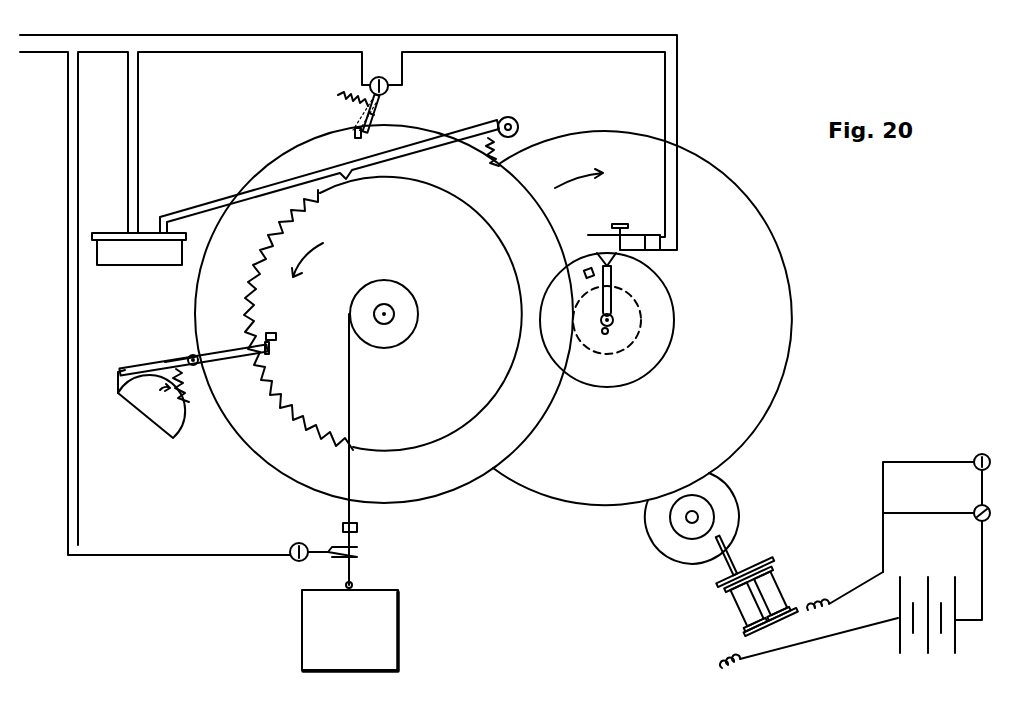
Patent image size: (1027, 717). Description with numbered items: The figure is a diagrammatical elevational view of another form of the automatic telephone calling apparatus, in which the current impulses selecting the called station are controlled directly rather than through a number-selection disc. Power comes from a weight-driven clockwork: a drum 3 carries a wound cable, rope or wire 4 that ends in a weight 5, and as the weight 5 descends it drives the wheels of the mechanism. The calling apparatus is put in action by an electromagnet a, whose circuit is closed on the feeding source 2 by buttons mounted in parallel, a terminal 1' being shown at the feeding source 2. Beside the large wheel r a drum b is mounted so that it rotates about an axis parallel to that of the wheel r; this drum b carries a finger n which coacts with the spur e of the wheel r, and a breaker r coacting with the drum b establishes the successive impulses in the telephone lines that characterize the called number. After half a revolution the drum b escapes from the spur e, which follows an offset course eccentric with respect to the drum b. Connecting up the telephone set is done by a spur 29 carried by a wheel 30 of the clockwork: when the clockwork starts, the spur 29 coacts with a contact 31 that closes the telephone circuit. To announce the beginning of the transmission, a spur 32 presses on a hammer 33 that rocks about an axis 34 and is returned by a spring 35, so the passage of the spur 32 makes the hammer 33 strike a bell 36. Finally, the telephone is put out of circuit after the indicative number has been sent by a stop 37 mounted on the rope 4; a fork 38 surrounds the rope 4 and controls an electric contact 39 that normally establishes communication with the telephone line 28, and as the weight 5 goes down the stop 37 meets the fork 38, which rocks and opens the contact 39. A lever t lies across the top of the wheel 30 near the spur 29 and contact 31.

The telephone-line 28 is at (512, 53).
The spur 29 is at (352, 130).
The wheel 30 is at (273, 443).
The contact 31 is at (405, 85).
The spur 32 is at (278, 337).
The hammer 33 is at (225, 360).
The axis 34 is at (192, 357).
The spring 35 is at (168, 362).
The bell 36 is at (150, 405).
The stop 37 is at (342, 524).
The fork 38 is at (360, 550).
The electric contact 39 is at (292, 560).
The drum 3 is at (403, 303).
The rope 4 is at (352, 570).
The weight 5 is at (380, 623).
The trip lever t is at (285, 187).
The wheel r is at (660, 237).
The drum b is at (665, 297).
The finger n is at (611, 285).
The spur e is at (587, 270).
The electromagnet a is at (783, 592).
The feeding source 2 is at (955, 600).
The terminal 1' is at (994, 453).